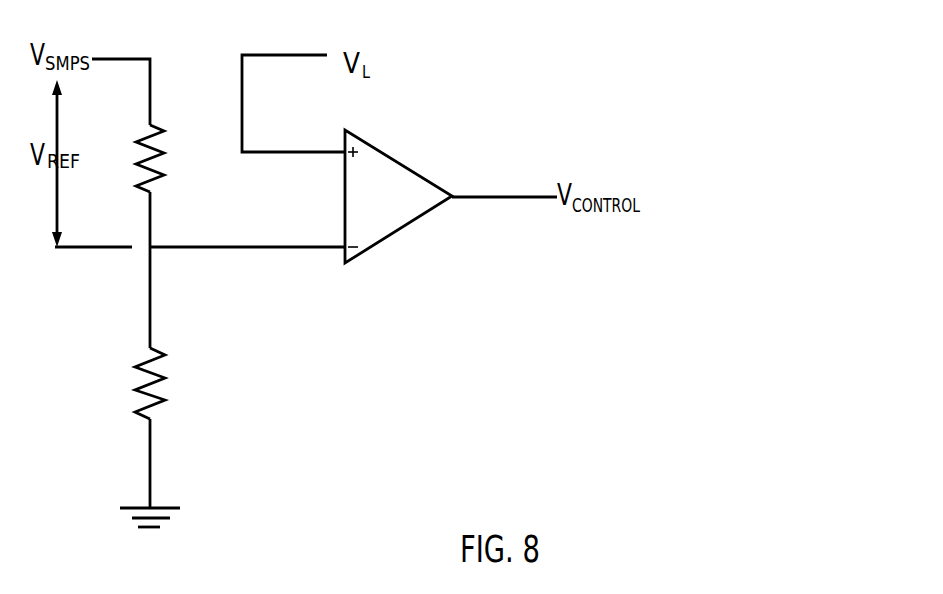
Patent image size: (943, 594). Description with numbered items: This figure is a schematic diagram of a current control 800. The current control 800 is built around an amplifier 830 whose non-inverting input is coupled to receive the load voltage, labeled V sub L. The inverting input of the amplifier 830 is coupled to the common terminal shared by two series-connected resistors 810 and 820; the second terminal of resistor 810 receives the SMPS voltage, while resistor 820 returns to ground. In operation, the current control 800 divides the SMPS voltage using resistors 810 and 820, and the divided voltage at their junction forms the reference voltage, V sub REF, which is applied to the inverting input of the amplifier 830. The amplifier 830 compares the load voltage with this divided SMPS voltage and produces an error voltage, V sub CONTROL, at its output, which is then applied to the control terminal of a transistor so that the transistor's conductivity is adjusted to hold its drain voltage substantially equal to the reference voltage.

The current control 800 is at (480, 279).
The resistor 810 is at (128, 158).
The resistor 820 is at (119, 383).
The amplifier 830 is at (398, 196).